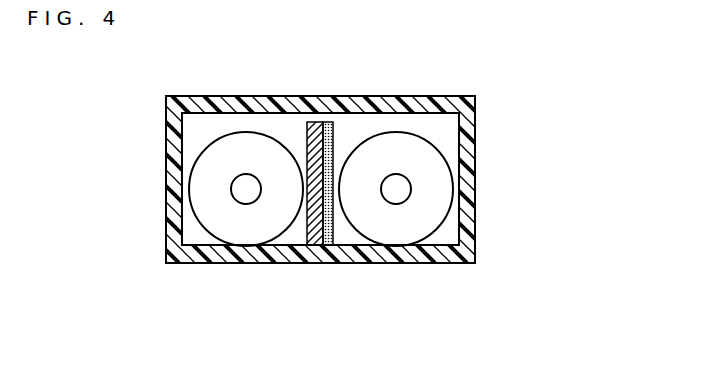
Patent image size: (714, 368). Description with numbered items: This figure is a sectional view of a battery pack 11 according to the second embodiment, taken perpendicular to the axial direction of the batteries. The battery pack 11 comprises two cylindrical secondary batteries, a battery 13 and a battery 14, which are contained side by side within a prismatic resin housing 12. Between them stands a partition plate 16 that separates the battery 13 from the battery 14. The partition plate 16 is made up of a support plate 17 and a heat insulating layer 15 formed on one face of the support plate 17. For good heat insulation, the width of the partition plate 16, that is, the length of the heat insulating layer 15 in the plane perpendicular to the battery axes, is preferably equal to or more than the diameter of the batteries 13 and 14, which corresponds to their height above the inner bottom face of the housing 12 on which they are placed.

The battery pack 11 is at (238, 90).
The prismatic resin housing 12 is at (384, 102).
The battery 13 is at (213, 183).
The battery 14 is at (432, 183).
The heat insulating layer 15 is at (336, 226).
The partition plate 16 is at (370, 314).
The support plate 17 is at (312, 226).